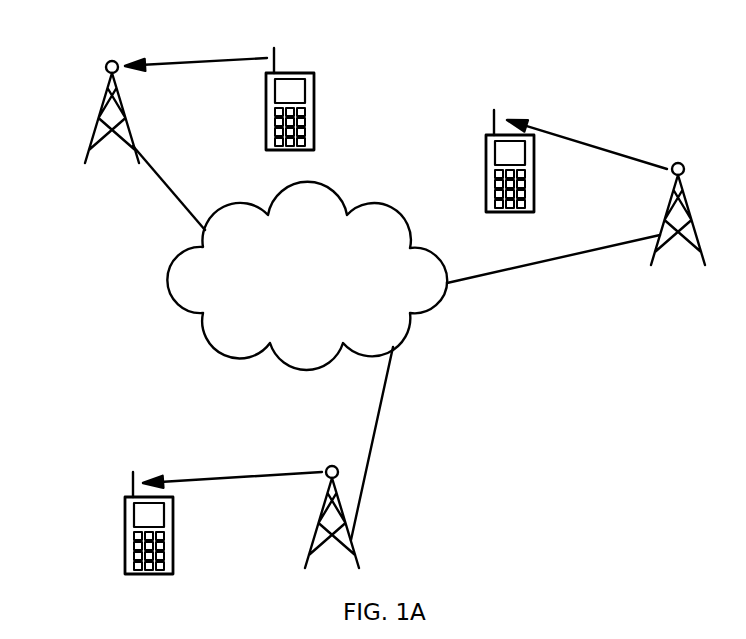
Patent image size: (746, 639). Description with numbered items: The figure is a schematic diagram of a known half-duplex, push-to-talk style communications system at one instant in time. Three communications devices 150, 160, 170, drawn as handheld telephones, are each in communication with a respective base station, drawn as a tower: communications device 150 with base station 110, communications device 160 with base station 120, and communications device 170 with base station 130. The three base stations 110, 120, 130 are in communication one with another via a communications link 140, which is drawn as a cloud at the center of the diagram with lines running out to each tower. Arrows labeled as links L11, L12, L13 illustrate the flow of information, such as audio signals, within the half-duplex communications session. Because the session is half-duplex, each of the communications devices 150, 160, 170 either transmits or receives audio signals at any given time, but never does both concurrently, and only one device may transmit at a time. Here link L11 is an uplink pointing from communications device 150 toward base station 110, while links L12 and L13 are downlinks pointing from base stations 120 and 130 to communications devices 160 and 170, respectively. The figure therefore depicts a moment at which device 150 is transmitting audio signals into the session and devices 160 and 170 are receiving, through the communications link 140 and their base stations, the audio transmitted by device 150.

The base station 110 is at (99, 118).
The base station 120 is at (664, 222).
The base station 130 is at (320, 518).
The communications link 140 is at (167, 278).
The communications device 150 is at (314, 98).
The communications device 160 is at (486, 163).
The communications device 170 is at (125, 520).
The link L11 is at (200, 52).
The link L12 is at (608, 136).
The link L13 is at (211, 468).